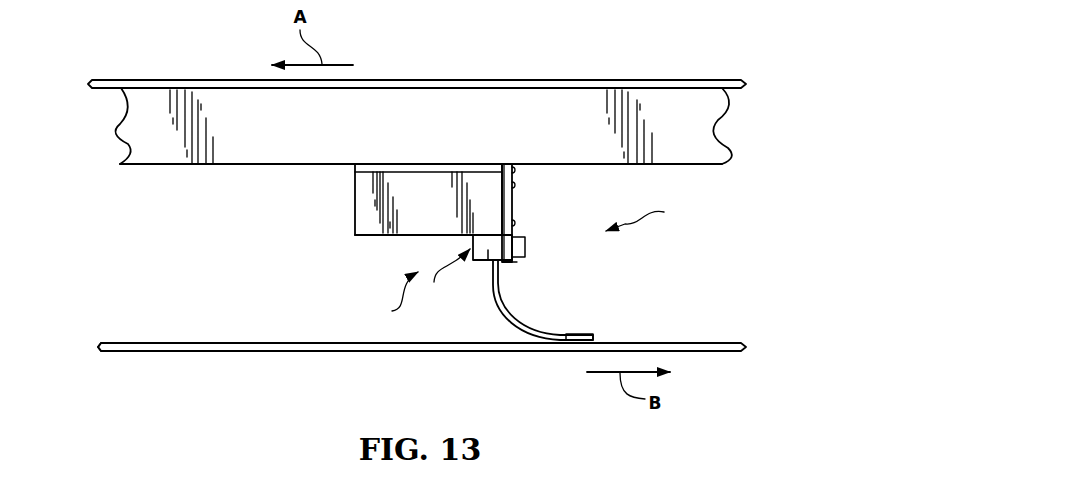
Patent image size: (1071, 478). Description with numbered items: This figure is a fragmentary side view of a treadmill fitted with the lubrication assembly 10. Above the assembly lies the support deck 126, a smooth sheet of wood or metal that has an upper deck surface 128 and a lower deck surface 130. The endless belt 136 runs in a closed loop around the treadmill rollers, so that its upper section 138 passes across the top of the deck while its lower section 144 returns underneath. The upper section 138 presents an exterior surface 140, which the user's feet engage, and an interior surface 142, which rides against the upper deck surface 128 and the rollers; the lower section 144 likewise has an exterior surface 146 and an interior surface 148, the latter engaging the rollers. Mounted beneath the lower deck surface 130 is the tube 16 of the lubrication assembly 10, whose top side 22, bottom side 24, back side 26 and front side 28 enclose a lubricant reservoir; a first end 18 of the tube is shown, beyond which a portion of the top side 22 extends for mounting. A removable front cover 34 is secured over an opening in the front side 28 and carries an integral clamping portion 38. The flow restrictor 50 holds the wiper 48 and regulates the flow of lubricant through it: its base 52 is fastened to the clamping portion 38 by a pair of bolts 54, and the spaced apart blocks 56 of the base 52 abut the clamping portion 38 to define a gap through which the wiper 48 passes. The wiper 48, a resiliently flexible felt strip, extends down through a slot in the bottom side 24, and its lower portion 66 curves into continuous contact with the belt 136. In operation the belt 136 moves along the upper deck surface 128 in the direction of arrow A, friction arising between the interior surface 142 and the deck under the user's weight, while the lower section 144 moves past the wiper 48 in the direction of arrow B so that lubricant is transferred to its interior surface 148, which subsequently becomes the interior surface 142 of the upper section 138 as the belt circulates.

The lubrication assembly 10 is at (646, 215).
The tube 16 is at (360, 213).
The first end 18 is at (418, 204).
The top side 22 is at (433, 164).
The bottom side 24 is at (398, 236).
The back side 26 is at (354, 192).
The front side 28 is at (512, 187).
The front cover 34 is at (508, 207).
The clamping portion 38 is at (508, 262).
The wiper 48 is at (517, 326).
The flow restrictor 50 is at (392, 298).
The base 52 is at (445, 275).
The bolts 54 is at (524, 247).
The blocks 56 is at (488, 256).
The lower portion 66 is at (588, 335).
The support deck 126 is at (123, 125).
The upper deck surface 128 is at (142, 86).
The lower deck surface 130 is at (140, 166).
The endless belt 136 is at (698, 82).
The upper section 138 is at (512, 82).
The exterior surface 140 is at (608, 82).
The interior surface 142 is at (728, 94).
The lower section 144 is at (168, 351).
The exterior surface 146 is at (203, 351).
The interior surface 148 is at (252, 343).